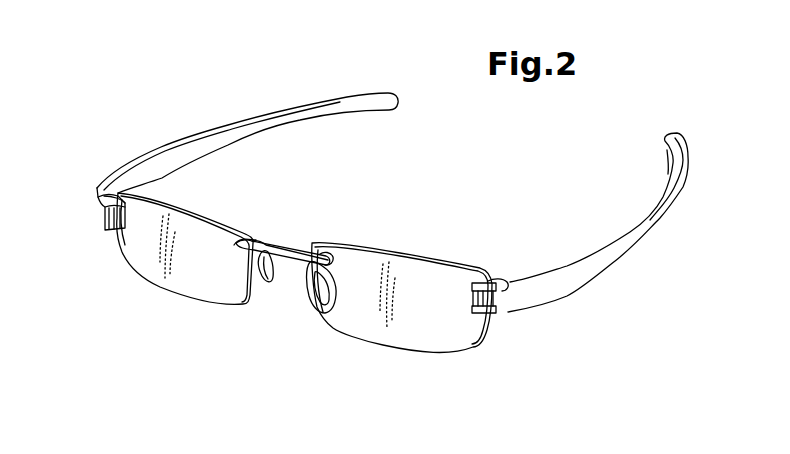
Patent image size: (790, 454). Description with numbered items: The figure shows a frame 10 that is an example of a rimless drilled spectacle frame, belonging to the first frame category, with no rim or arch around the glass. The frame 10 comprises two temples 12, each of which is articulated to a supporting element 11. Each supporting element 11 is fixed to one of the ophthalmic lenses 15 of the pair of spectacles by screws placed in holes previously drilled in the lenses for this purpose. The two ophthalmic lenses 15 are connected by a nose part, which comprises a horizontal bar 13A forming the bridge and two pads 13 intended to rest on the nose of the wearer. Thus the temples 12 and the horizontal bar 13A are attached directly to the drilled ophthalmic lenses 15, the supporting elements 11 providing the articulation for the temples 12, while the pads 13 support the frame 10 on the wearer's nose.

The frame 10 is at (556, 224).
The supporting element 11 is at (116, 230).
The temple 12 is at (180, 152).
The pad 13 is at (333, 309).
The horizontal bar 13A is at (293, 238).
The ophthalmic lens 15 is at (205, 275).